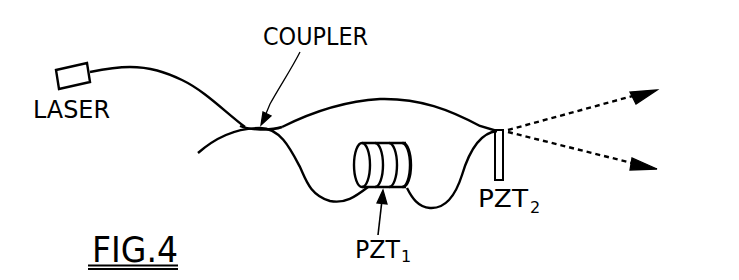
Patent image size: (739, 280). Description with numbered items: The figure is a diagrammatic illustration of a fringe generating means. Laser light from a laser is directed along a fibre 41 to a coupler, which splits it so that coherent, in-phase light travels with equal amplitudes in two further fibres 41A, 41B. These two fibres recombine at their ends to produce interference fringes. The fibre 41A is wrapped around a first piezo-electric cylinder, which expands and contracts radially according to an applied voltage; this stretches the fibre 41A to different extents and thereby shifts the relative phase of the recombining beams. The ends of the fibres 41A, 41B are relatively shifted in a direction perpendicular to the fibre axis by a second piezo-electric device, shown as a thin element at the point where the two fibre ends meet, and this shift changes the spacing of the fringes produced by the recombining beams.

The fibre 41 is at (147, 69).
The fibre 41A is at (302, 182).
The fibre 41B is at (393, 100).